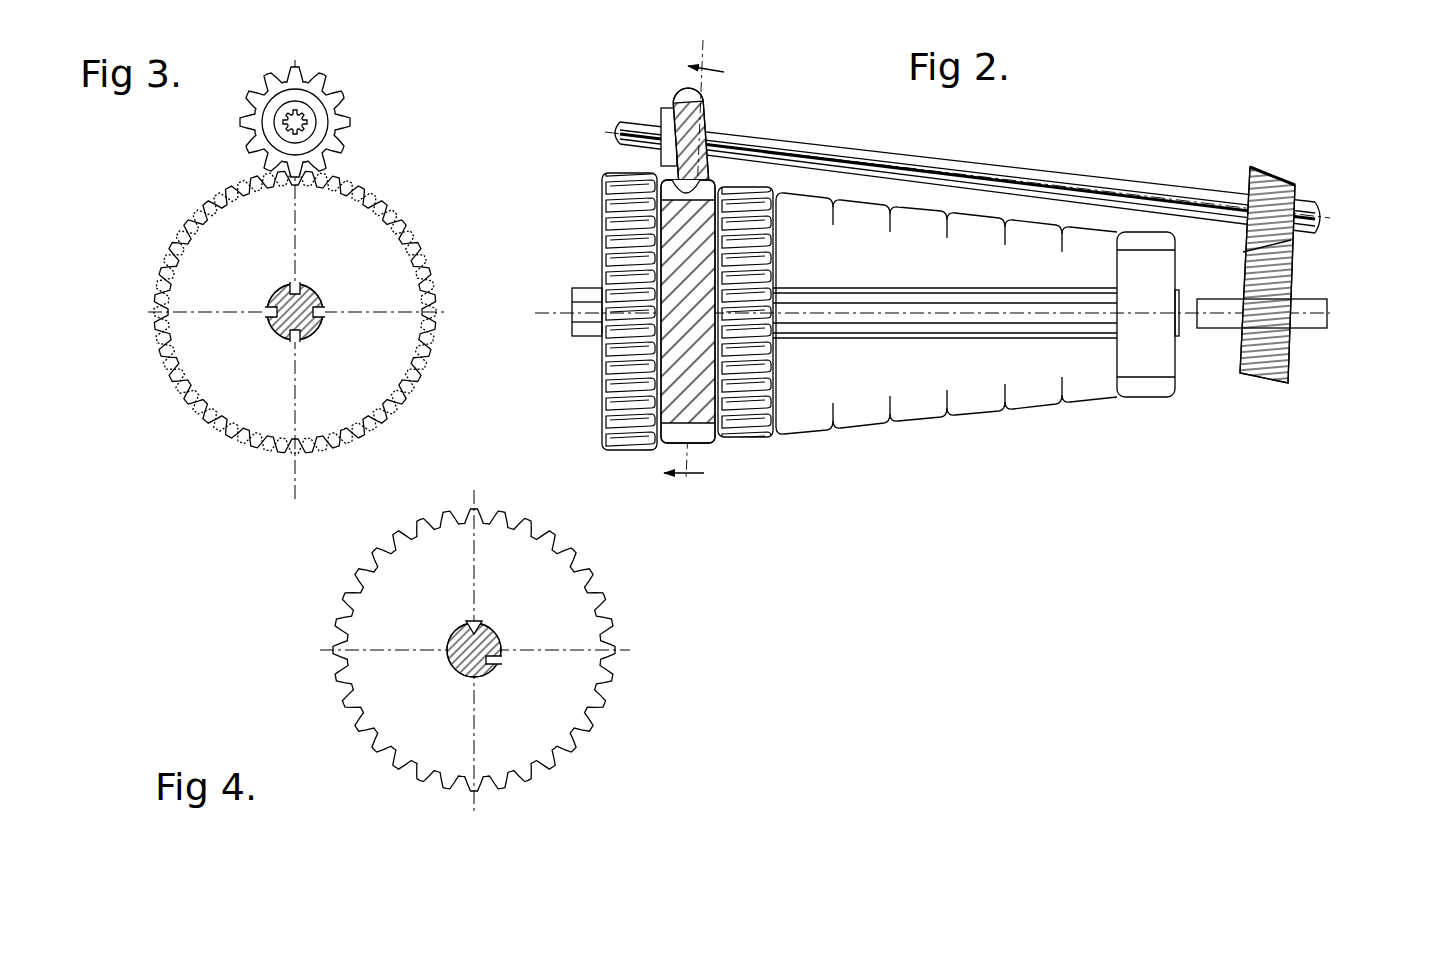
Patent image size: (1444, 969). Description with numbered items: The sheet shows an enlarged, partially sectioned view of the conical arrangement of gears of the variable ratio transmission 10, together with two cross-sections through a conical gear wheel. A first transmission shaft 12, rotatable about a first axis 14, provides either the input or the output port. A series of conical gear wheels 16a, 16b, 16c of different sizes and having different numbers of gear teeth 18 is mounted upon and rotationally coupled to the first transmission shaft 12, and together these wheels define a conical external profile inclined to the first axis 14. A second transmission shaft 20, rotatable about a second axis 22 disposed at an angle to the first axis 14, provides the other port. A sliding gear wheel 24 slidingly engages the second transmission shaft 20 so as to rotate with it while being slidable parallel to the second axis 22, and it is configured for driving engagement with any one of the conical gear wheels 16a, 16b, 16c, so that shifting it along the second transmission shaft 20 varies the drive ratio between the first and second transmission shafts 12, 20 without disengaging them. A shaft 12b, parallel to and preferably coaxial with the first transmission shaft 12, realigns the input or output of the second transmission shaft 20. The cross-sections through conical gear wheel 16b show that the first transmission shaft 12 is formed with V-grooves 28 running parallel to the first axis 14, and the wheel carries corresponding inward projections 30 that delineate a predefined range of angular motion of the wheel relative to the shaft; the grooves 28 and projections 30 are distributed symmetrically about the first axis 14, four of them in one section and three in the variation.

In FIG. 2, the variable ratio transmission 10 is at (1184, 128).
In FIG. 2, the first transmission shaft 12 is at (581, 337).
In FIG. 3, the first transmission shaft 12 is at (259, 348).
In FIG. 4, the first transmission shaft 12 is at (509, 729).
In FIG. 2, the shaft 12b is at (1311, 319).
In FIG. 2, the first axis 14 is at (514, 311).
In FIG. 2, the conical gear wheel 16a is at (633, 451).
In FIG. 2, the conical gear wheel 16b is at (709, 443).
In FIG. 3, the conical gear wheel 16b is at (353, 255).
In FIG. 4, the conical gear wheel 16b is at (521, 724).
In FIG. 2, the conical gear wheel 16c is at (746, 438).
In FIG. 3, the conical gear wheel 16c is at (202, 406).
In FIG. 2, the gear teeth 18 is at (594, 338).
In FIG. 2, the second transmission shaft 20 is at (866, 148).
In FIG. 3, the second transmission shaft 20 is at (304, 122).
In FIG. 2, the second axis 22 is at (1317, 221).
In FIG. 2, the sliding gear wheel 24 is at (713, 128).
In FIG. 3, the sliding gear wheel 24 is at (336, 121).
In FIG. 3, the V-grooves 28 is at (276, 327).
In FIG. 4, the V-grooves 28 is at (487, 666).
In FIG. 3, the inward projections 30 is at (321, 331).
In FIG. 4, the inward projections 30 is at (501, 662).